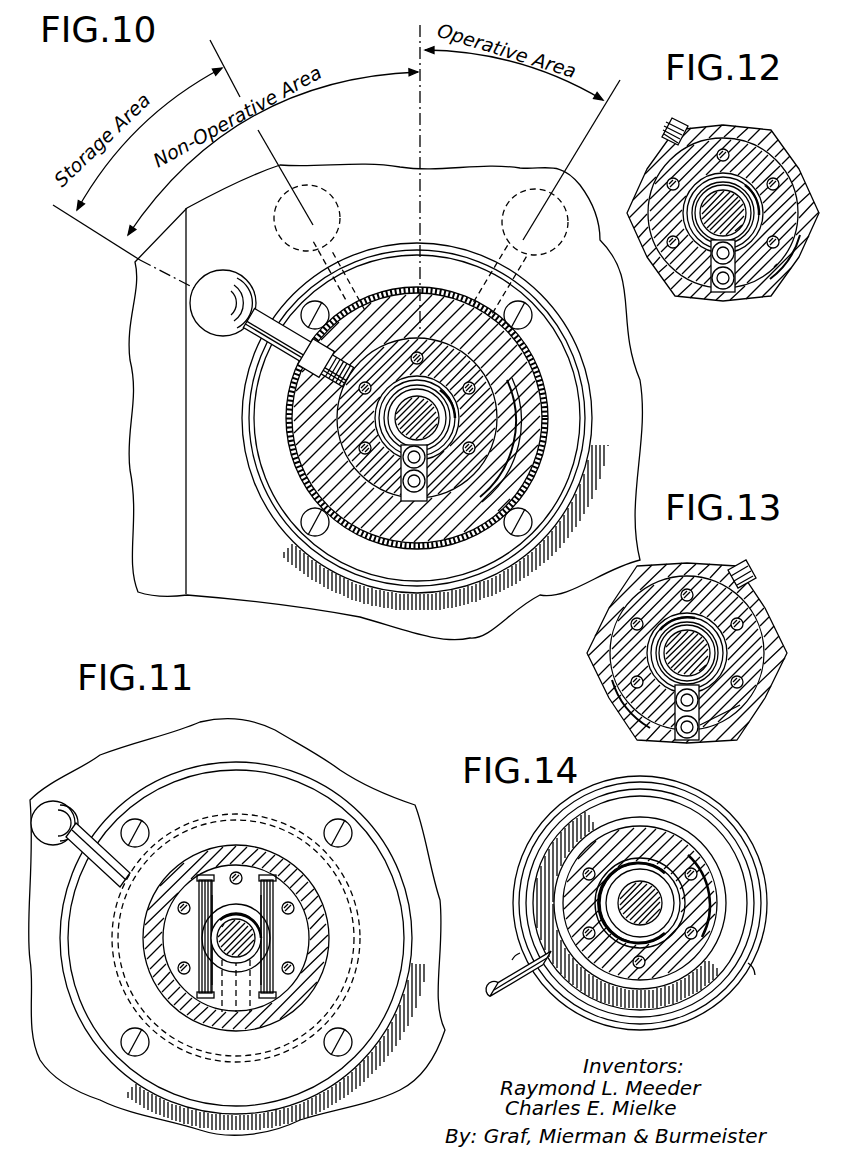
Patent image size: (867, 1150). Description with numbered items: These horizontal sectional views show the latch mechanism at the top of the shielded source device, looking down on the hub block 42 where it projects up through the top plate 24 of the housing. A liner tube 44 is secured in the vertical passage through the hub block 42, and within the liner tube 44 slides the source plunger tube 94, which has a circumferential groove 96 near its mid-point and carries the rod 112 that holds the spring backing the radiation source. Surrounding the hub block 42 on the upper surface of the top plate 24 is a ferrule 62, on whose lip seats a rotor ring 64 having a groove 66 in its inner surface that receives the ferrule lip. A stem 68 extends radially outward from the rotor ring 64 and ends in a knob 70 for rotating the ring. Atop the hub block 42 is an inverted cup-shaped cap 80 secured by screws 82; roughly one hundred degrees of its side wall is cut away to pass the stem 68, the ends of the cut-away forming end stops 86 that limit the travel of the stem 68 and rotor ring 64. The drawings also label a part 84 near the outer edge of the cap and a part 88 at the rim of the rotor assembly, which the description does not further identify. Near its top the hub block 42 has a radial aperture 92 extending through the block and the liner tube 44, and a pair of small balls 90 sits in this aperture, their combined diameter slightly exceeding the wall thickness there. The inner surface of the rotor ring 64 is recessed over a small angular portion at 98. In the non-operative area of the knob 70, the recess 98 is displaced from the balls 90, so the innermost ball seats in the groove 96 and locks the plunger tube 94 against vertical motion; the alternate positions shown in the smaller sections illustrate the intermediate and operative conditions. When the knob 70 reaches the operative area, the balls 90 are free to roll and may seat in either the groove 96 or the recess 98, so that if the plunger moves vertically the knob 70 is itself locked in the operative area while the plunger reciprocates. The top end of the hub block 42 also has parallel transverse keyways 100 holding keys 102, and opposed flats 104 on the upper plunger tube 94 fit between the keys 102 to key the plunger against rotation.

In FIG. 10, the top plate 24 is at (243, 558).
In FIG. 11, the top plate 24 is at (315, 750).
In FIG. 10, the hub block 42 is at (520, 362).
In FIG. 11, the hub block 42 is at (300, 950).
In FIG. 12, the hub block 42 is at (705, 305).
In FIG. 13, the hub block 42 is at (630, 645).
In FIG. 14, the hub block 42 is at (670, 845).
In FIG. 10, the liner tube 44 is at (417, 400).
In FIG. 11, the liner tube 44 is at (240, 905).
In FIG. 12, the liner tube 44 is at (776, 140).
In FIG. 13, the liner tube 44 is at (660, 655).
In FIG. 14, the liner tube 44 is at (630, 905).
In FIG. 10, the ferrule 62 is at (567, 471).
In FIG. 11, the ferrule 62 is at (332, 790).
In FIG. 10, the rotor ring 64 is at (312, 457).
In FIG. 12, the rotor ring 64 is at (748, 120).
In FIG. 13, the rotor ring 64 is at (655, 560).
In FIG. 14, the rotor ring 64 is at (545, 840).
In FIG. 14, the groove 66 is at (552, 855).
In FIG. 10, the stem 68 is at (258, 313).
In FIG. 11, the stem 68 is at (80, 838).
In FIG. 12, the stem 68 is at (680, 124).
In FIG. 13, the stem 68 is at (748, 564).
In FIG. 14, the stem 68 is at (503, 995).
In FIG. 10, the knob 70 is at (226, 283).
In FIG. 11, the knob 70 is at (50, 800).
In FIG. 10, the cap 80 is at (527, 478).
In FIG. 11, the cap 80 is at (285, 862).
In FIG. 14, the cap 80 is at (550, 812).
In FIG. 10, the screws 82 is at (300, 404).
In FIG. 11, the screws 82 is at (290, 978).
In FIG. 12, the screws 82 is at (650, 262).
In FIG. 13, the screws 82 is at (615, 626).
In FIG. 14, the screws 82 is at (642, 975).
In FIG. 10, the housing rim 84 is at (404, 257).
In FIG. 10, the end stops 86 is at (458, 318).
In FIG. 11, the end stops 86 is at (352, 883).
In FIG. 14, the end stops 86 is at (520, 953).
In FIG. 10, the bearing rim 88 is at (462, 533).
In FIG. 11, the bearing rim 88 is at (205, 1035).
In FIG. 13, the bearing rim 88 is at (737, 713).
In FIG. 10, the balls 90 is at (410, 538).
In FIG. 12, the balls 90 is at (725, 292).
In FIG. 13, the balls 90 is at (690, 742).
In FIG. 10, the radial aperture 92 is at (365, 532).
In FIG. 11, the radial aperture 92 is at (245, 1045).
In FIG. 12, the radial aperture 92 is at (678, 290).
In FIG. 13, the radial aperture 92 is at (640, 688).
In FIG. 10, the source plunger tube 94 is at (383, 420).
In FIG. 11, the source plunger tube 94 is at (217, 915).
In FIG. 12, the source plunger tube 94 is at (698, 212).
In FIG. 13, the source plunger tube 94 is at (692, 628).
In FIG. 14, the source plunger tube 94 is at (673, 900).
In FIG. 10, the circumferential groove 96 is at (392, 418).
In FIG. 12, the circumferential groove 96 is at (695, 198).
In FIG. 13, the circumferential groove 96 is at (672, 615).
In FIG. 10, the recess 98 is at (527, 437).
In FIG. 12, the recess 98 is at (775, 278).
In FIG. 13, the recess 98 is at (640, 710).
In FIG. 14, the recess 98 is at (710, 872).
In FIG. 11, the keyways 100 is at (185, 872).
In FIG. 11, the keys 102 is at (200, 983).
In FIG. 11, the flats 104 is at (225, 928).
In FIG. 10, the rod 112 is at (537, 397).
In FIG. 11, the rod 112 is at (207, 940).
In FIG. 12, the rod 112 is at (680, 150).
In FIG. 13, the rod 112 is at (650, 595).
In FIG. 14, the rod 112 is at (605, 905).